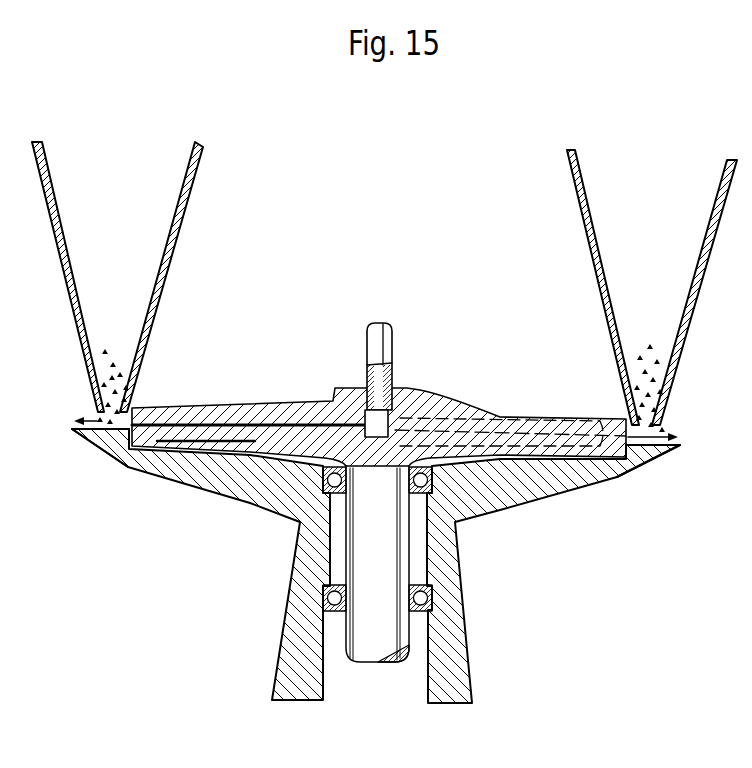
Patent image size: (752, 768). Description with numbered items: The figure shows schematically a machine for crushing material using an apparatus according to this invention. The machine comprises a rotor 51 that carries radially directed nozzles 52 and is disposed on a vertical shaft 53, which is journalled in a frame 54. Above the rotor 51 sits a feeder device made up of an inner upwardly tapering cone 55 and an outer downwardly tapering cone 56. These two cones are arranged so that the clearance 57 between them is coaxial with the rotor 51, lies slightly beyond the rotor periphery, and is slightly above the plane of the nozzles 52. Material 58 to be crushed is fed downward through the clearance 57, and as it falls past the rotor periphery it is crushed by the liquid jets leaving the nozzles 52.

The rotor 51 is at (245, 448).
The nozzles 52 is at (125, 465).
The vertical shaft 53 is at (373, 572).
The frame 54 is at (300, 627).
The inner upwardly tapering cone 55 is at (156, 300).
The outer downwardly tapering cone 56 is at (73, 310).
The clearance 57 is at (100, 401).
The material 58 is at (116, 362).